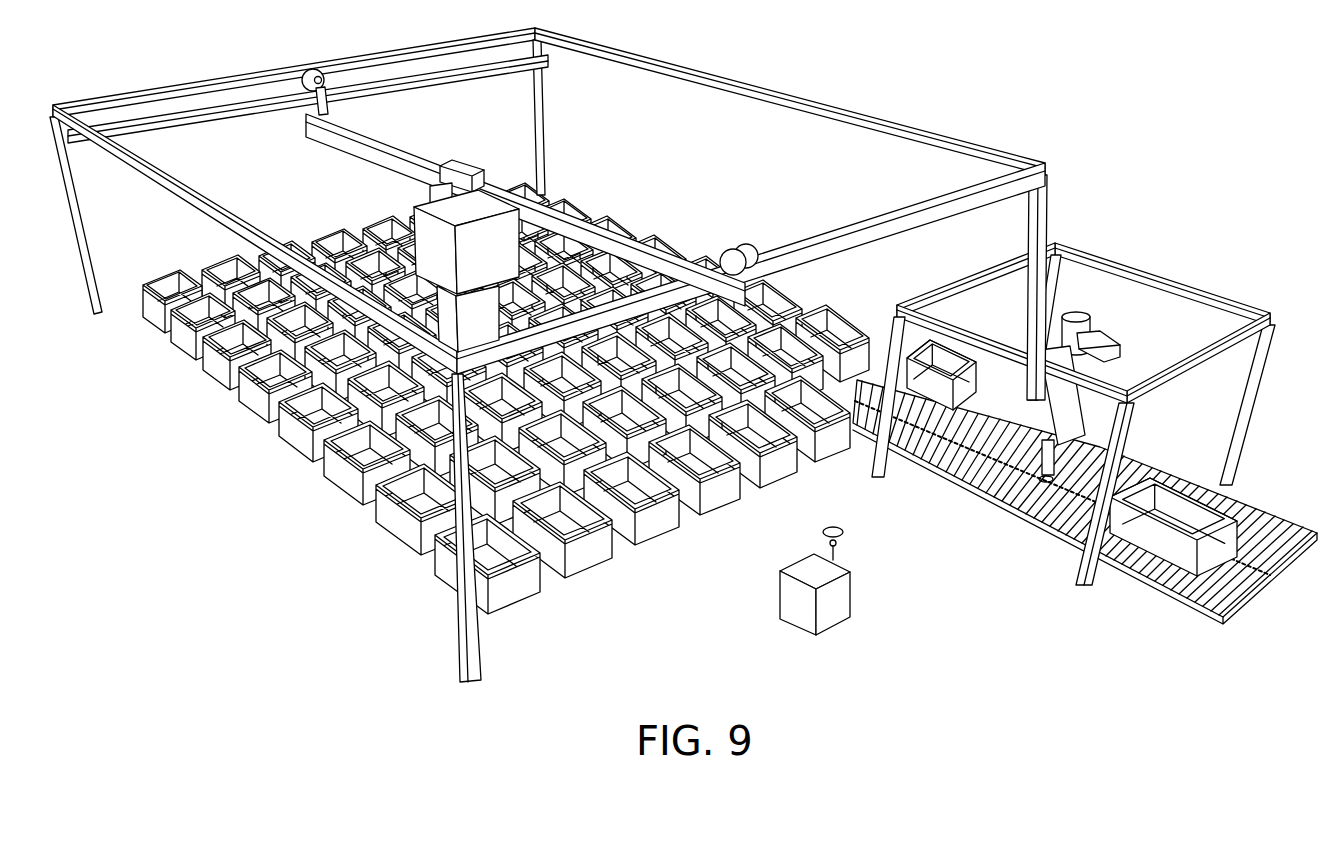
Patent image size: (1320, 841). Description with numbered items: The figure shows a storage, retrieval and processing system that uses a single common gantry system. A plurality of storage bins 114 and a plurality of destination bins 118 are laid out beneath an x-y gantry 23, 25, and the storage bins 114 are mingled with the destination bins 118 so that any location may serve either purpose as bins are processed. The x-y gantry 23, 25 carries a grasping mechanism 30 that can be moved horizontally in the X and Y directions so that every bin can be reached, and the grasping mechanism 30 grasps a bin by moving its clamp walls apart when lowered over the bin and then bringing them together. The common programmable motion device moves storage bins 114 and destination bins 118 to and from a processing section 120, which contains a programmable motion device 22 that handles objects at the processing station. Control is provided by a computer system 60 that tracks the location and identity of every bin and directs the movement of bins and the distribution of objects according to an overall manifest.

The x-y gantry 23 is at (407, 76).
The x-y gantry 25 is at (436, 160).
The grasping mechanism 30 is at (418, 216).
The storage bins 114 is at (250, 412).
The destination bins 118 is at (812, 320).
The processing section 120 is at (1085, 418).
The robot arm 22 is at (1085, 418).
The computer system 60 is at (850, 596).